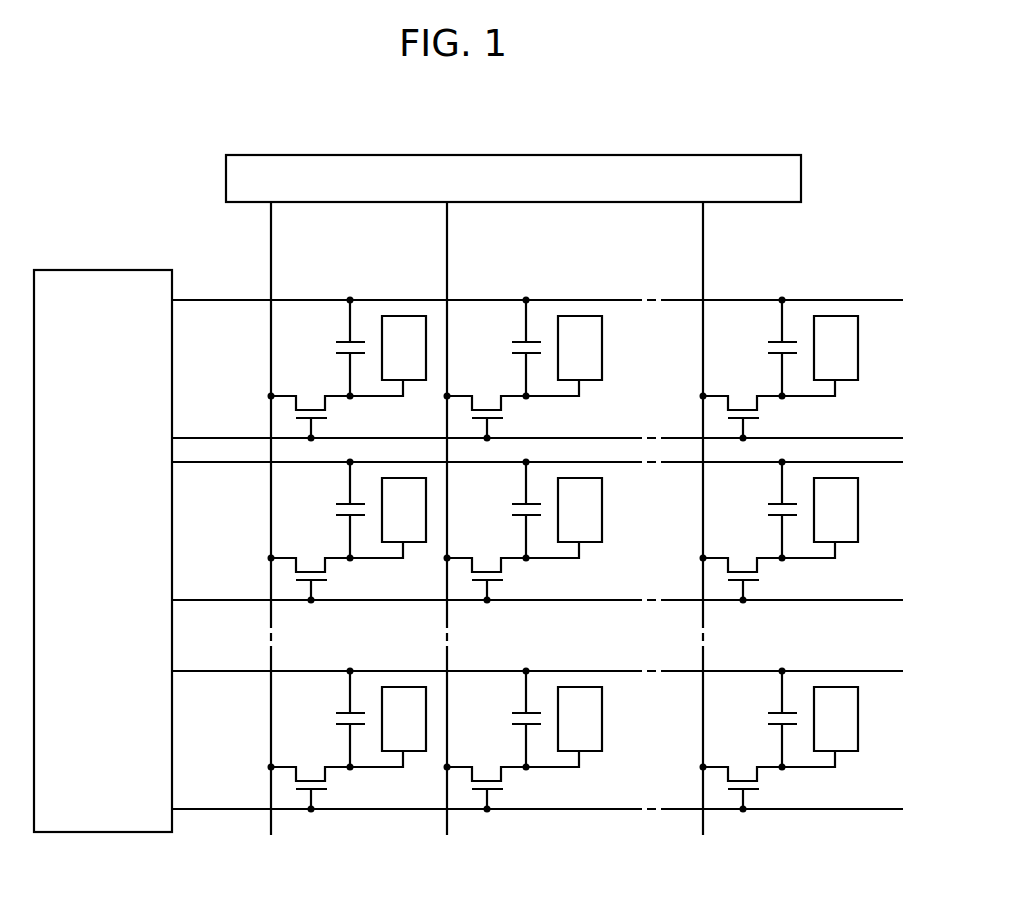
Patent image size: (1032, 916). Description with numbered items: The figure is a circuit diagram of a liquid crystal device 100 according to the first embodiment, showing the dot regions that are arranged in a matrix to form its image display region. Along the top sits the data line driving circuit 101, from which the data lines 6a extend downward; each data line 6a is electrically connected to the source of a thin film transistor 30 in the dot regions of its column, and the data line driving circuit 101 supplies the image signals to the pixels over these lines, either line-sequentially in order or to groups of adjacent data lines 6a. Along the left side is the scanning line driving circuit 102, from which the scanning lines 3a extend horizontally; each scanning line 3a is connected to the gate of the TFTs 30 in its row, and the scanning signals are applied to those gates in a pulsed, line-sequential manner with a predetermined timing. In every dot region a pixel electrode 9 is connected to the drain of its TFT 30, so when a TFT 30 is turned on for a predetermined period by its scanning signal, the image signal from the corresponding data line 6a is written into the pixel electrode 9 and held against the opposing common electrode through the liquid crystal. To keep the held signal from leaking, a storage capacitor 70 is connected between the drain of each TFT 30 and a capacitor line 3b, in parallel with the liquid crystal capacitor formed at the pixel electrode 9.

The liquid crystal device 100 is at (866, 250).
The data line driving circuit 101 is at (226, 178).
The scanning line driving circuit 102 is at (108, 270).
The scanning line 3a is at (257, 437).
The capacitor line 3b is at (256, 299).
The data line 6a is at (272, 292).
The pixel electrode 9 is at (403, 323).
The thin film transistor 30 is at (346, 415).
The storage capacitor 70 is at (322, 347).